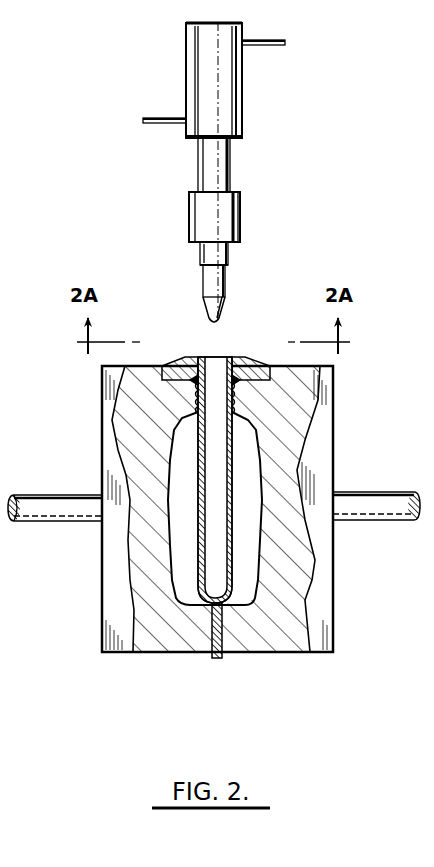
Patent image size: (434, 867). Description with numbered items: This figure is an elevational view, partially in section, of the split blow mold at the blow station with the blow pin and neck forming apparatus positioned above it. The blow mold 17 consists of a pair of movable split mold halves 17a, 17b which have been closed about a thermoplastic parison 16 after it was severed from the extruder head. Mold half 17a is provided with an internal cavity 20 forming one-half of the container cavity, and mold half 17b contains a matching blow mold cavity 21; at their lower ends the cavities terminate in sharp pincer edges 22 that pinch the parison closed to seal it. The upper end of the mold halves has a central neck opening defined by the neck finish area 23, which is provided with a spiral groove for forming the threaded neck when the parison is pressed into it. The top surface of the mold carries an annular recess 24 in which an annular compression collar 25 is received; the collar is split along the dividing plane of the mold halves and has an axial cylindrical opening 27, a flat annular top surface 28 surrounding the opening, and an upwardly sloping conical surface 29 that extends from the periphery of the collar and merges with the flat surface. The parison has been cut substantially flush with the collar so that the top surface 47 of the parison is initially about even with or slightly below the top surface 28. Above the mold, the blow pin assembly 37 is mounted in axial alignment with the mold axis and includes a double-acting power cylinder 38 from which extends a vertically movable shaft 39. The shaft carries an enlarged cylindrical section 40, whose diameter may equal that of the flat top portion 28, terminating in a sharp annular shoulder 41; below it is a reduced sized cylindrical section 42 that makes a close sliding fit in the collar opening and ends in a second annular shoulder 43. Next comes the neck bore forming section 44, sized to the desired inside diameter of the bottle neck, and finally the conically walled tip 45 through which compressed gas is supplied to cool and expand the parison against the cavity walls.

The parison 16 is at (190, 548).
The blow mold 17 is at (214, 527).
The mold half 17a is at (120, 610).
The mold half 17b is at (318, 582).
The internal cavity 20 is at (194, 481).
The blow mold cavity 21 is at (258, 481).
The pincer edges 22 is at (213, 614).
The neck finish area 23 is at (244, 402).
The annular recess 24 is at (186, 394).
The annular compression collar 25 is at (228, 364).
The axial cylindrical opening 27 is at (212, 357).
The flat annular top surface 28 is at (240, 356).
The conical surface 29 is at (268, 362).
The blow pin assembly 37 is at (154, 75).
The double-acting power cylinder 38 is at (228, 90).
The shaft 39 is at (215, 168).
The enlarged cylindrical section 40 is at (220, 220).
The annular shoulder 41 is at (230, 247).
The reduced sized cylindrical section 42 is at (203, 260).
The second annular shoulder 43 is at (226, 270).
The neck bore forming section 44 is at (213, 289).
The tip 45 is at (208, 310).
The top surface of the parison 47 is at (185, 350).